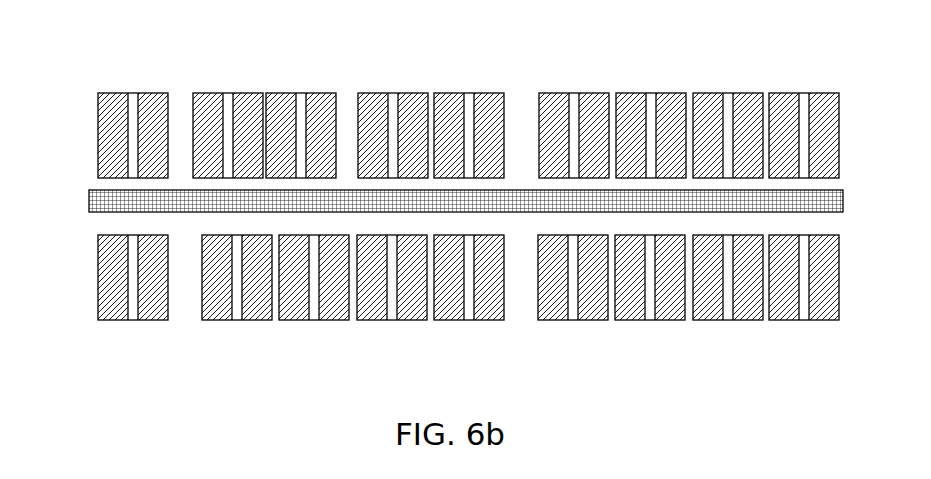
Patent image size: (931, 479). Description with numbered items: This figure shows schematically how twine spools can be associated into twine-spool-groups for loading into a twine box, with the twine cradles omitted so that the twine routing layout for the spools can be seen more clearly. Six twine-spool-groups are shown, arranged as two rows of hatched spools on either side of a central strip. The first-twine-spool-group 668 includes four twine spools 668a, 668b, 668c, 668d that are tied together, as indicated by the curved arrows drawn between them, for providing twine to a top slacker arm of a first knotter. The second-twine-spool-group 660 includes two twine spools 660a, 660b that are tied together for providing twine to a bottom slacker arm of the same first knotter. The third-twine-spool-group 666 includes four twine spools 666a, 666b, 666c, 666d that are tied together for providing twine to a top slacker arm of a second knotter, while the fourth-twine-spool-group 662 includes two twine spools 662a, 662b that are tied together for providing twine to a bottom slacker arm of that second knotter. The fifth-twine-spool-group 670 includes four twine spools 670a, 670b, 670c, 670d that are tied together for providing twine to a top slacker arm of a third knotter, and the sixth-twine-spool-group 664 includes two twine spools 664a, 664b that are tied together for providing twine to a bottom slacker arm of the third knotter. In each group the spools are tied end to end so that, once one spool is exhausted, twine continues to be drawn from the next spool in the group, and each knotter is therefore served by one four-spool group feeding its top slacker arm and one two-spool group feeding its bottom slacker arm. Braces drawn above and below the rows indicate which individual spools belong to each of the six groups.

The second-twine-spool-group 660 is at (78, 319).
The twine spool 660a is at (132, 92).
The twine spool 660b is at (134, 321).
The fourth-twine-spool-group 662 is at (340, 88).
The twine spool 662a is at (226, 92).
The twine spool 662b is at (300, 92).
The sixth-twine-spool-group 664 is at (505, 88).
The twine spool 664a is at (391, 92).
The twine spool 664b is at (470, 92).
The third-twine-spool-group 666 is at (840, 88).
The twine spool 666a is at (572, 92).
The twine spool 666b is at (648, 92).
The twine spool 666c is at (726, 92).
The twine spool 666d is at (804, 92).
The first-twine-spool-group 668 is at (505, 325).
The twine spool 668a is at (236, 321).
The twine spool 668b is at (314, 321).
The twine spool 668c is at (392, 321).
The twine spool 668d is at (470, 321).
The fifth-twine-spool-group 670 is at (840, 325).
The twine spool 670a is at (573, 321).
The twine spool 670b is at (650, 321).
The twine spool 670c is at (728, 321).
The twine spool 670d is at (804, 321).